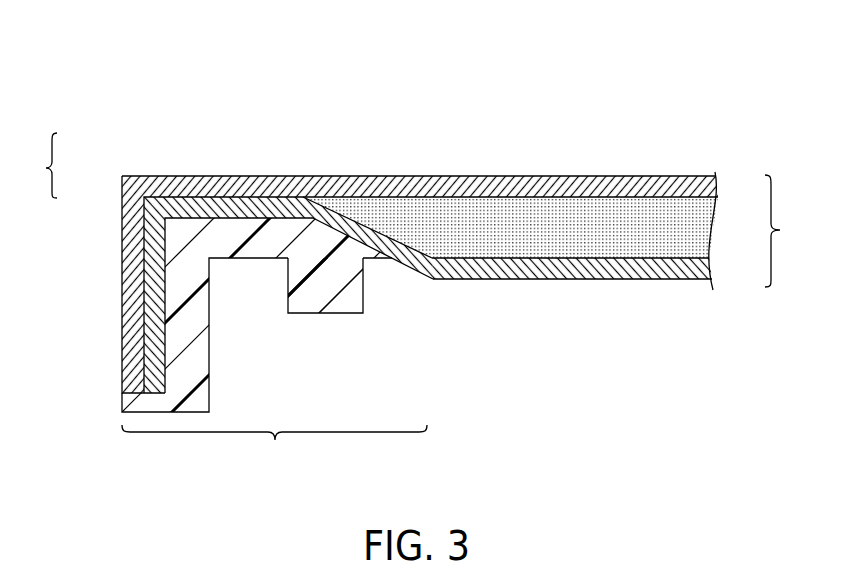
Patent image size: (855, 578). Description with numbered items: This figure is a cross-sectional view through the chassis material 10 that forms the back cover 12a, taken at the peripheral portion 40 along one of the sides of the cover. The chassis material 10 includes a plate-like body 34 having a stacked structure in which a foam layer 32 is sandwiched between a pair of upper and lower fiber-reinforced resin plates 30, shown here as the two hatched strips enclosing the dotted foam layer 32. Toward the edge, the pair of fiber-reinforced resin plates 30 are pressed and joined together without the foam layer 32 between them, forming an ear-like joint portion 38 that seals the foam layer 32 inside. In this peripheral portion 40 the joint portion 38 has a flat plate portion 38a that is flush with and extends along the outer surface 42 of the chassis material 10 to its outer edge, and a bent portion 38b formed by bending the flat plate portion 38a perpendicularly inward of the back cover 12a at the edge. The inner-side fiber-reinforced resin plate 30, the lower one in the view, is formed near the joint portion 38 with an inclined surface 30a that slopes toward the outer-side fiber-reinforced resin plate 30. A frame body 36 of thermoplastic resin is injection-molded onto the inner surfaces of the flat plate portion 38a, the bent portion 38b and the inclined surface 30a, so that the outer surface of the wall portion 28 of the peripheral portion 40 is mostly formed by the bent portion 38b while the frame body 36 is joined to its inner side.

The chassis material 10 is at (103, 100).
The back cover 12a is at (412, 316).
The wall portion 28 is at (122, 377).
The fiber-reinforced resin plate 30 is at (716, 186).
The inclined surface 30a is at (403, 271).
The foam layer 32 is at (707, 226).
The plate-like body 34 is at (555, 263).
The frame body 36 is at (310, 318).
The joint portion 38 is at (165, 263).
The flat plate portion 38a is at (240, 176).
The bent portion 38b is at (122, 238).
The peripheral portion 40 is at (274, 447).
The outer surface 42 is at (463, 177).